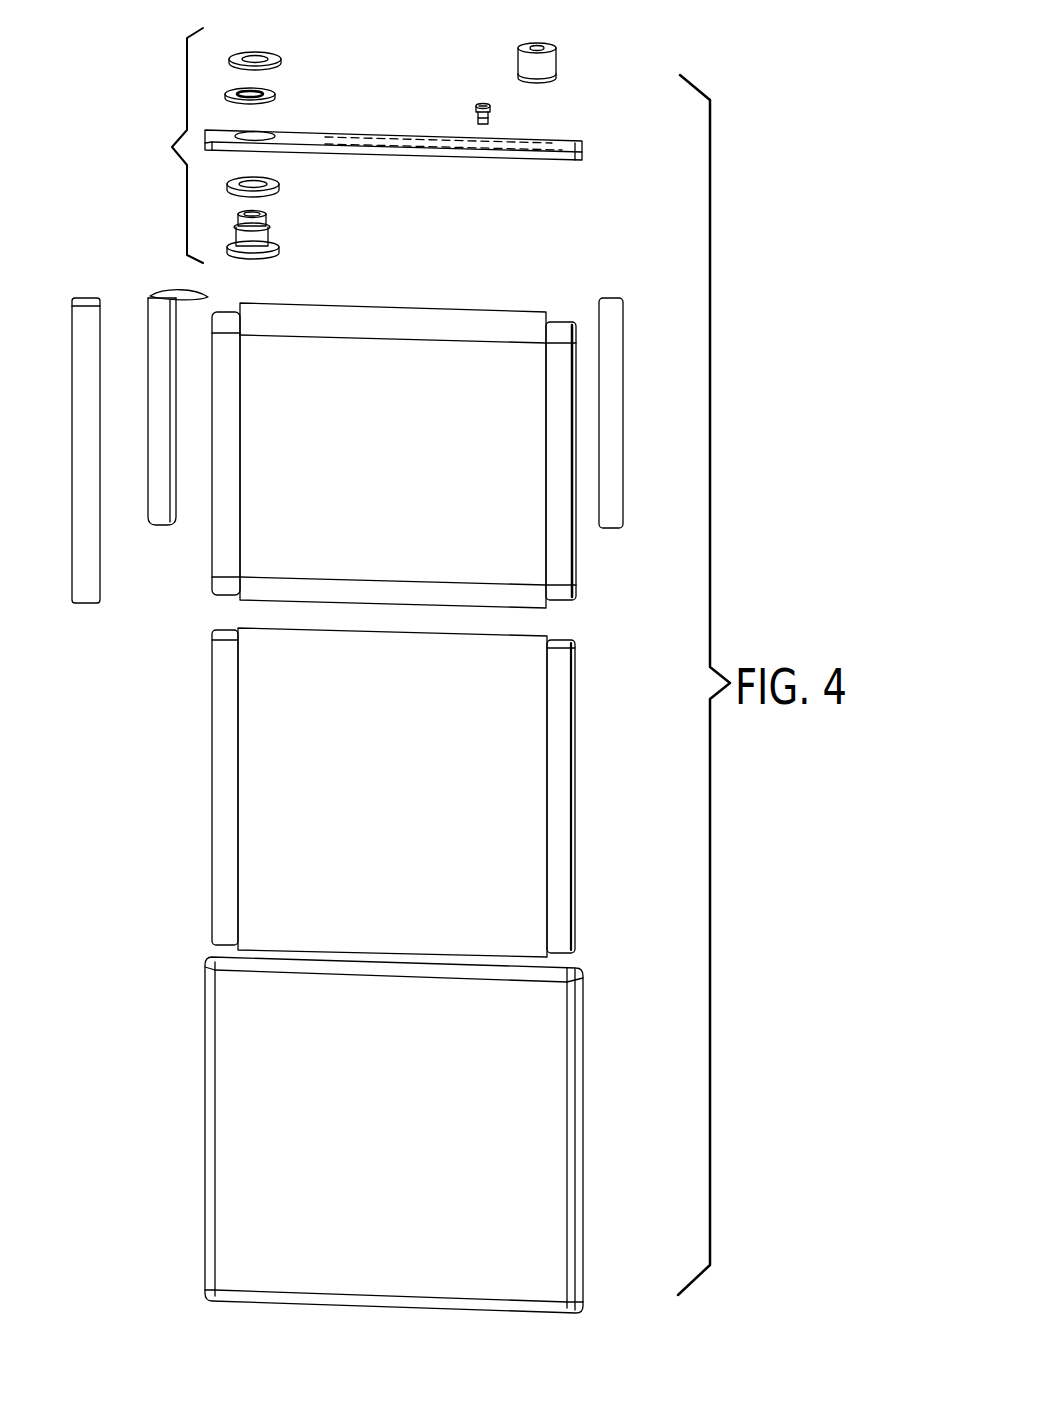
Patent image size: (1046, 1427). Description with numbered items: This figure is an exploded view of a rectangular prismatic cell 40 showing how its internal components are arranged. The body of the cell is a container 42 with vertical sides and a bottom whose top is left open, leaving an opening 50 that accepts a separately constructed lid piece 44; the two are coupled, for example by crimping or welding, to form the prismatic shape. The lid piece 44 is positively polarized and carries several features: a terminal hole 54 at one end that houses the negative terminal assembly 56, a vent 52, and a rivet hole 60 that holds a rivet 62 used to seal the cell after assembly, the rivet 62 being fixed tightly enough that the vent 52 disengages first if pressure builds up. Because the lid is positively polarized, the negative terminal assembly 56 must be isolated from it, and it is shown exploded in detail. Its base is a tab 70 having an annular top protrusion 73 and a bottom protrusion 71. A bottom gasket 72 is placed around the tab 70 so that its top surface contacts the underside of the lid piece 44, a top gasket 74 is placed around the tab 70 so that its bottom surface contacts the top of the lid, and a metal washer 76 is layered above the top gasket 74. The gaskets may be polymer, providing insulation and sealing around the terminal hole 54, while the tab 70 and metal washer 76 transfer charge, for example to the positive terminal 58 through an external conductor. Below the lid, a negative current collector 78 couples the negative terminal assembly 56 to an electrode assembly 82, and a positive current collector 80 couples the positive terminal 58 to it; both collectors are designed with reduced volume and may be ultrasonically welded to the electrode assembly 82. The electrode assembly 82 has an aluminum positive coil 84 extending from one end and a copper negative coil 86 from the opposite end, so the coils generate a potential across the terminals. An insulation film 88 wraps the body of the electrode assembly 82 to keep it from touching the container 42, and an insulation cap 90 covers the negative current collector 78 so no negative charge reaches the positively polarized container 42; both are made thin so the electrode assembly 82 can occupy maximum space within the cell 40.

The prismatic cell 40 is at (96, 76).
The container portion 42 is at (431, 1130).
The lid piece 44 is at (503, 140).
The opening 50 is at (570, 975).
The vent 52 is at (393, 117).
The terminal hole 54 is at (265, 133).
The negative terminal assembly 56 is at (172, 145).
The positive terminal 58 is at (553, 62).
The rivet hole 60 is at (485, 142).
The rivet 62 is at (484, 104).
The tab 70 is at (265, 238).
The bottom protrusion 71 is at (273, 252).
The bottom gasket 72 is at (279, 183).
The annular top protrusion 73 is at (270, 227).
The top gasket 74 is at (268, 92).
The metal washer 76 is at (272, 57).
The negative current collector 78 is at (160, 520).
The positive current collector 80 is at (612, 410).
The electrode assembly 82 is at (408, 472).
The positive coil 84 is at (604, 461).
The negative coil 86 is at (222, 572).
The insulation film 88 is at (514, 815).
The insulation cap 90 is at (80, 520).